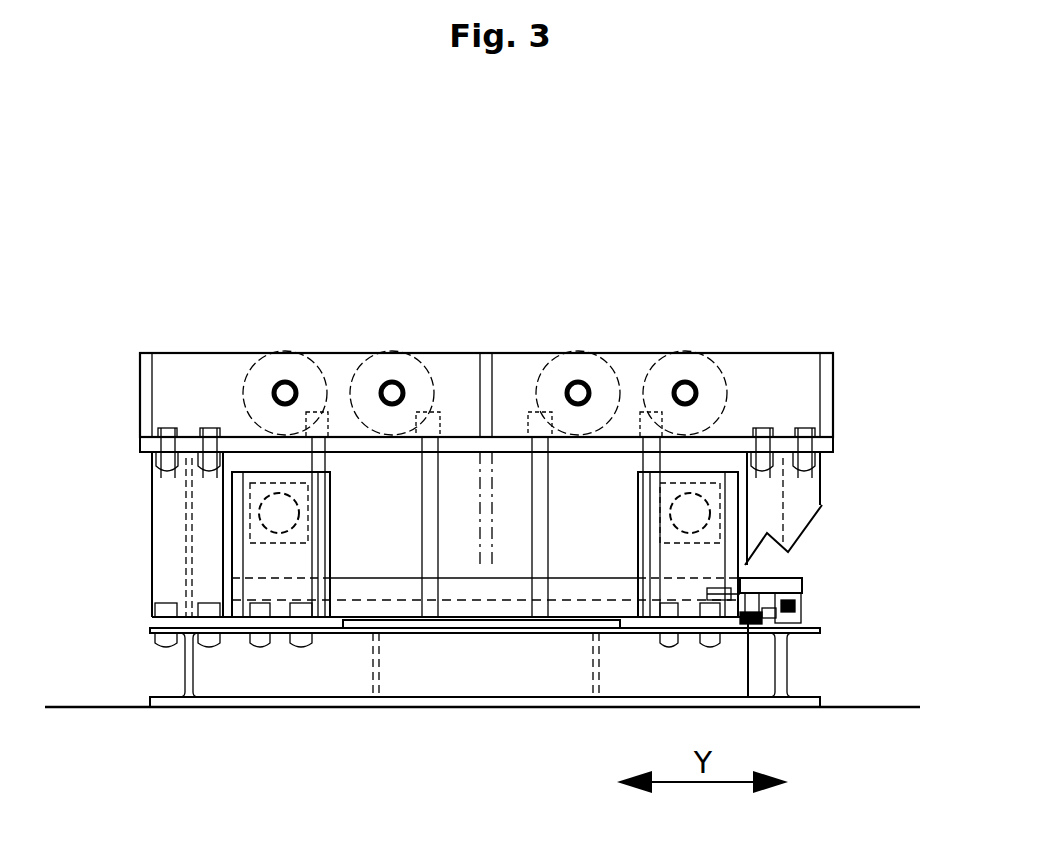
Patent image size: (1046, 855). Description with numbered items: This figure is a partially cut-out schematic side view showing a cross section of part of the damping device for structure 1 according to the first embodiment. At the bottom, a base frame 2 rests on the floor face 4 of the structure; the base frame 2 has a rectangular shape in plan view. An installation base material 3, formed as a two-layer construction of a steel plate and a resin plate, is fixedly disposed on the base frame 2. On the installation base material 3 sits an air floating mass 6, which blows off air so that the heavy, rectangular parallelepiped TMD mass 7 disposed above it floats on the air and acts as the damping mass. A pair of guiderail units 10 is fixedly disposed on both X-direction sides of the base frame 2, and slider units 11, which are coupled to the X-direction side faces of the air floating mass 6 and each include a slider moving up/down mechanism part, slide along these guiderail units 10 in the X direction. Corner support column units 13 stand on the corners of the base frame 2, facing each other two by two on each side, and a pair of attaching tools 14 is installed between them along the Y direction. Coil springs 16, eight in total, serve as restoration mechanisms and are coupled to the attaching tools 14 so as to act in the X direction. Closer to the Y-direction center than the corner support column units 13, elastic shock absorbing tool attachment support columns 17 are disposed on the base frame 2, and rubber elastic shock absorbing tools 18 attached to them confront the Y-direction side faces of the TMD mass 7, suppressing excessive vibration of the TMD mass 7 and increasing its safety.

The damping device for structure 1 is at (690, 285).
The base frame 2 is at (275, 708).
The installation base material 3 is at (448, 622).
The floor face 4 is at (868, 705).
The air floating mass 6 is at (568, 608).
The TMD mass 7 is at (600, 497).
The guiderail units 10 is at (795, 626).
The slider units 11 is at (800, 585).
The corner support column units 13 is at (162, 583).
The attaching tools 14 is at (522, 352).
The coil springs 16 is at (383, 373).
The elastic shock absorbing tool attachment support columns 17 is at (265, 565).
The elastic shock absorbing tools 18 is at (270, 512).